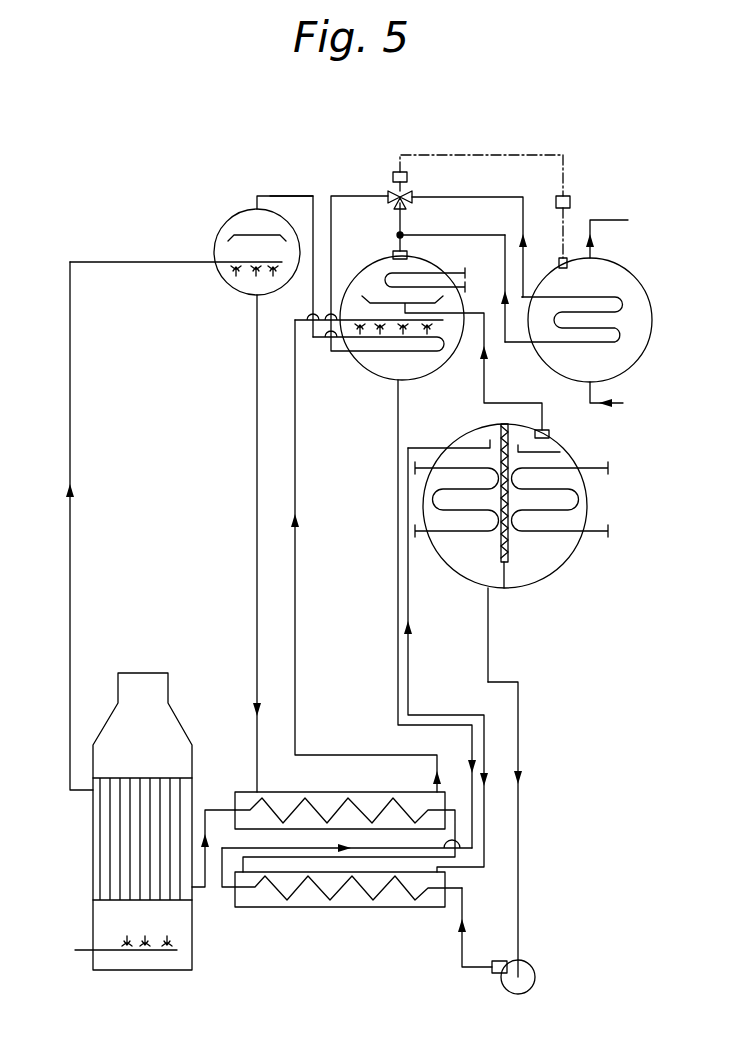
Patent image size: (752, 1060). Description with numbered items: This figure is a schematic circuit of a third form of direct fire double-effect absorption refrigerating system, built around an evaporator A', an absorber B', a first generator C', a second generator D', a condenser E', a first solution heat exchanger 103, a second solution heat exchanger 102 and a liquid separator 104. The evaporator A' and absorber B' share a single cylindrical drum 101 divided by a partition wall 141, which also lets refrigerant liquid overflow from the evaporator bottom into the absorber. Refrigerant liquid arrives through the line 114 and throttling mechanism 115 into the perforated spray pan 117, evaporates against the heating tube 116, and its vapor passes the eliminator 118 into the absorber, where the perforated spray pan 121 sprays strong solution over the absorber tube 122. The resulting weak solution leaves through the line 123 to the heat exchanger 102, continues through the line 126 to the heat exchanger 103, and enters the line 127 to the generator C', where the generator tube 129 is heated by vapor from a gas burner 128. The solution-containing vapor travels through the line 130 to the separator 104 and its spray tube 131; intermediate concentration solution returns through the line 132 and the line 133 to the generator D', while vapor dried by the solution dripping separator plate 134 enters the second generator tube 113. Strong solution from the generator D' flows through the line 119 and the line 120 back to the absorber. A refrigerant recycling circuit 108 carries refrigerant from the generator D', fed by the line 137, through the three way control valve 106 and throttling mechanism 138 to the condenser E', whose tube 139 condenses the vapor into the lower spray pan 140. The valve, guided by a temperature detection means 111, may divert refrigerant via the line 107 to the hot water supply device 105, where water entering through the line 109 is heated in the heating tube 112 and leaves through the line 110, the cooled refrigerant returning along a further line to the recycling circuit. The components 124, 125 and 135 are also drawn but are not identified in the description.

The cylindrical drum 101 is at (560, 570).
The second solution heat exchanger 102 is at (305, 900).
The first solution heat exchanger 103 is at (335, 800).
The liquid separator 104 is at (230, 222).
The hot water supply device 105 is at (617, 276).
The three way control valve 106 is at (413, 194).
The line 107 is at (494, 198).
The refrigerant recycling circuit 108 is at (386, 196).
The line 109 is at (603, 402).
The line 110 is at (612, 222).
The temperature detection means 111 is at (575, 188).
The heating tube 112 is at (622, 312).
The second generator tube 113 is at (412, 358).
The line 114 is at (487, 386).
The throttling mechanism 115 is at (558, 420).
The heating tube 116 is at (578, 520).
The perforated spray pan 117 is at (562, 452).
The eliminator 118 is at (510, 550).
The line 119 is at (396, 556).
The line 120 is at (410, 690).
The perforated spray pan 121 is at (466, 446).
The absorber tube 122 is at (440, 502).
The line 123 is at (521, 736).
The pump 124 is at (535, 972).
The pipe 125 is at (462, 944).
The line 126 is at (465, 860).
The line 127 is at (206, 806).
The gas burner 128 is at (160, 952).
The generator tube 129 is at (100, 846).
The line 130 is at (74, 596).
The spray tube 131 is at (244, 285).
The line 132 is at (255, 472).
The line 133 is at (297, 690).
The solution dripping separator plate 134 is at (257, 205).
The pipe 135 is at (300, 194).
The line 137 is at (334, 256).
The throttling mechanism 138 is at (418, 234).
The tube 139 is at (447, 297).
The lower spray pan 140 is at (386, 227).
The partition wall 141 is at (490, 598).
The evaporator A' is at (588, 560).
The absorber B' is at (453, 592).
The first generator C' is at (160, 821).
The second generator D' is at (402, 333).
The condenser E' is at (435, 243).